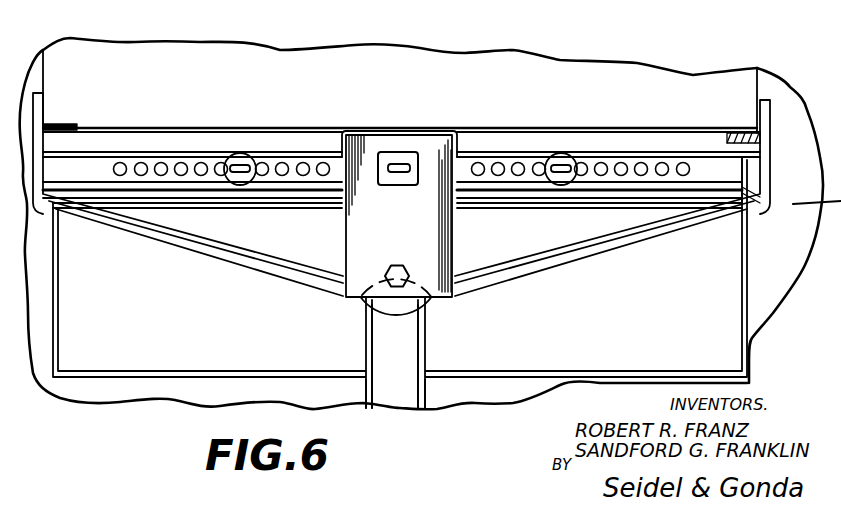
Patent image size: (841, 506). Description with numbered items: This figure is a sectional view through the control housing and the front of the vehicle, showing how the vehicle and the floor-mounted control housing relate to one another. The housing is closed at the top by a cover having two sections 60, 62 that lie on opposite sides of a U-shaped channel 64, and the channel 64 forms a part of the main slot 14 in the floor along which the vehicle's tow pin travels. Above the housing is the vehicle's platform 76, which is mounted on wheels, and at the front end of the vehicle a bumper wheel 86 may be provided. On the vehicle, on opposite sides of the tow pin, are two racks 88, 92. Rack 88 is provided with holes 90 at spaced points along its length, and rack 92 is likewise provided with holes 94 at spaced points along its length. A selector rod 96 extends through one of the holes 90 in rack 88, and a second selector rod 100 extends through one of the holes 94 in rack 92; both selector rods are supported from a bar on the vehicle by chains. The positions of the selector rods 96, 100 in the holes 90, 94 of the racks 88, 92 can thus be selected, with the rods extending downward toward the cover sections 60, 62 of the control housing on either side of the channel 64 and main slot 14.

The main slot 14 is at (405, 392).
The cover section 60 is at (152, 327).
The cover section 62 is at (645, 327).
The U-shaped channel 64 is at (415, 345).
The platform 76 is at (508, 101).
The bumper wheel 86 is at (390, 302).
The rack 88 is at (102, 160).
The holes 90 is at (161, 164).
The rack 92 is at (710, 167).
The holes 94 is at (663, 164).
The selector rod 96 is at (243, 160).
The selector rod 100 is at (572, 162).